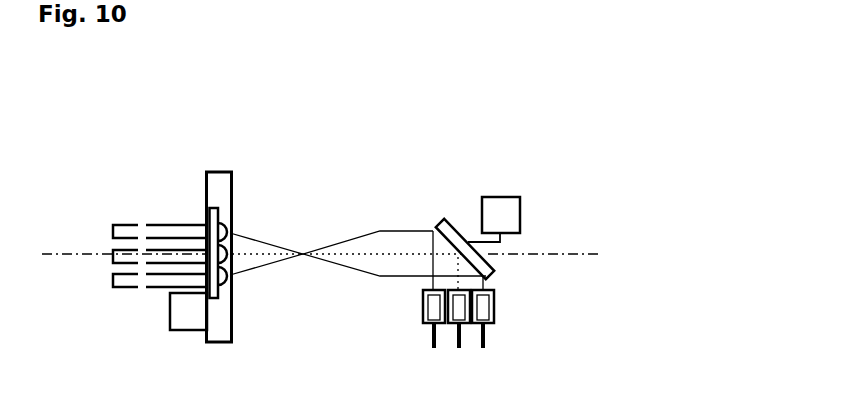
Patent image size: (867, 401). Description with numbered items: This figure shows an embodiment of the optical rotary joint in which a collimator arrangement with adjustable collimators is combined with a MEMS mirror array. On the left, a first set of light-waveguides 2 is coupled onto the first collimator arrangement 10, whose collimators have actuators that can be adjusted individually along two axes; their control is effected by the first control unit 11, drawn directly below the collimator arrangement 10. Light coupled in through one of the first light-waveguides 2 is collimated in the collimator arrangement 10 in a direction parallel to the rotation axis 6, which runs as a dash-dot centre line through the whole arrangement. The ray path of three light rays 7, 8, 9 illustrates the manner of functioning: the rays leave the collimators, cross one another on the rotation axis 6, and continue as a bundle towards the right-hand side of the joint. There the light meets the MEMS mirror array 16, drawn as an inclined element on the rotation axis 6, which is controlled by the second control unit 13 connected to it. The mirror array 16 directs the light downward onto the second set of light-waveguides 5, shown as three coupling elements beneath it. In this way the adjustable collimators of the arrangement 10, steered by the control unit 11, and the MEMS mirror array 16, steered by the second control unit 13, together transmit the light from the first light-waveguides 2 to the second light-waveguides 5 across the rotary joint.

The first set of light-waveguides 2 is at (115, 222).
The second set of light-waveguides 5 is at (418, 338).
The rotation axis 6 is at (90, 262).
The light ray 7 is at (237, 227).
The light ray 8 is at (250, 252).
The light ray 9 is at (257, 270).
The first collimator arrangement 10 is at (212, 168).
The control unit 11 is at (188, 311).
The second control unit 13 is at (494, 219).
The MEMS mirror array 16 is at (452, 222).